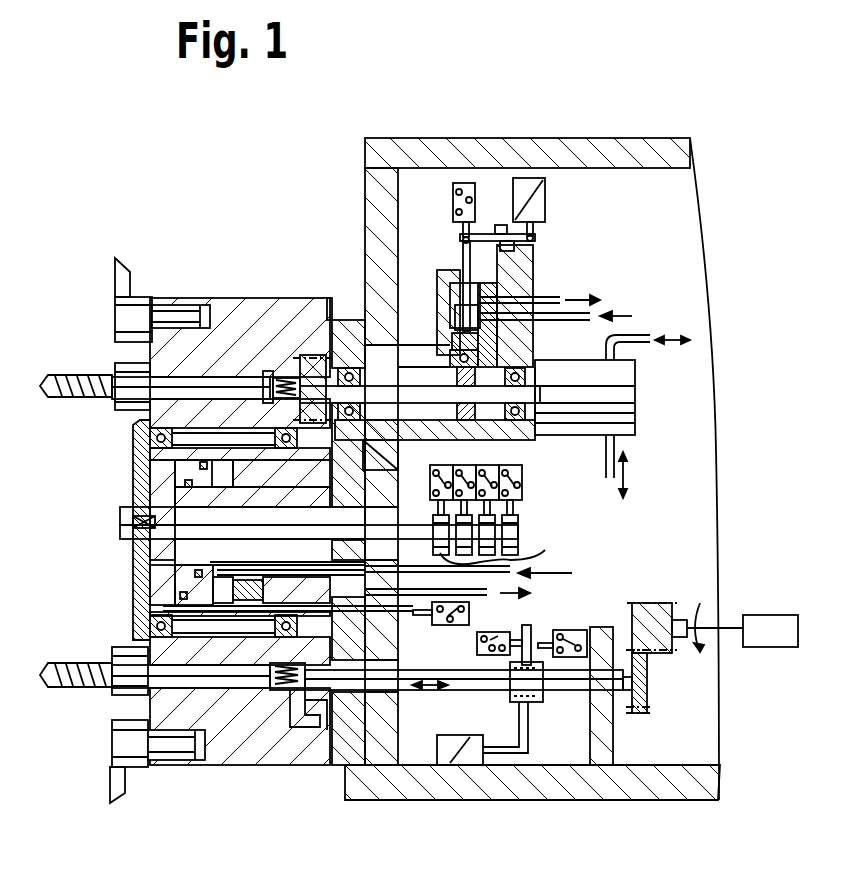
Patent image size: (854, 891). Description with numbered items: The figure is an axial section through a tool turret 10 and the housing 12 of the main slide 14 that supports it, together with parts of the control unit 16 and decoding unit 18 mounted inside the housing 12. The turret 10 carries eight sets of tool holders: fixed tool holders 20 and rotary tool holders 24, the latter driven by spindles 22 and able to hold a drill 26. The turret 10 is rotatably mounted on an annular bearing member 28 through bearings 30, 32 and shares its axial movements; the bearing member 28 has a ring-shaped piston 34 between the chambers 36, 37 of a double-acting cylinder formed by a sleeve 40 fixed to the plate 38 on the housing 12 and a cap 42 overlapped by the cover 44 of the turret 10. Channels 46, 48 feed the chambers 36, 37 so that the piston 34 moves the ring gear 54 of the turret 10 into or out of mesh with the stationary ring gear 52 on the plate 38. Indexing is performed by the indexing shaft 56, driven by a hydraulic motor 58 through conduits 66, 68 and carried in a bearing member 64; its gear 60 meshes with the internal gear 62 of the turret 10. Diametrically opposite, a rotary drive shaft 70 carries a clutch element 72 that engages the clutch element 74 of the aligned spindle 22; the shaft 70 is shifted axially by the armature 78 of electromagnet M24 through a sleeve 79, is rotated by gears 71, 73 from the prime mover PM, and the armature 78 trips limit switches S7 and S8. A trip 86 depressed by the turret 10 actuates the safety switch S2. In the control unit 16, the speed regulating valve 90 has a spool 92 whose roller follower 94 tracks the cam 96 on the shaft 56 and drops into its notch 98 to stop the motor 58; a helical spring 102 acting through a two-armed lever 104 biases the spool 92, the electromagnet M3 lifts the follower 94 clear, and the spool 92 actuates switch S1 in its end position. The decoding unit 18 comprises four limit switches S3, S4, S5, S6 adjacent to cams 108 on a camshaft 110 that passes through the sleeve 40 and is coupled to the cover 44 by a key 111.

The turret 10 is at (218, 290).
The housing 12 is at (408, 148).
The main slide 14 is at (468, 135).
The control unit 16 is at (545, 273).
The decoding unit 18 is at (522, 510).
The tool holders 20 is at (127, 308).
The spindles 22 is at (232, 385).
The rotary tool holders 24 is at (130, 375).
The drill 26 is at (78, 385).
The annular bearing member 28 is at (165, 598).
The bearing 30 is at (160, 622).
The bearing 32 is at (297, 627).
The ring-shaped piston 34 is at (160, 437).
The cylinder chamber 36 is at (185, 470).
The cylinder chamber 37 is at (255, 445).
The plate 38 is at (352, 802).
The sleeve-like portion 40 is at (195, 582).
The cap 42 is at (195, 560).
The cover 44 is at (143, 483).
The channel 46 is at (490, 576).
The channel 48 is at (487, 592).
The stationary ring gear 52 is at (345, 735).
The ring gear 54 is at (337, 330).
The indexing shaft 56 is at (455, 315).
The hydraulic motor 58 is at (625, 410).
The gear 60 is at (296, 428).
The internal gear 62 is at (298, 692).
The bearing member 64 is at (432, 442).
The conduit 66 is at (625, 462).
The conduit 68 is at (640, 345).
The rotary drive shaft 70 is at (430, 670).
The gear 71 is at (648, 692).
The clutch element 72 is at (295, 700).
The gear 73 is at (670, 580).
The clutch element 74 is at (290, 715).
The armature 78 is at (530, 715).
The sleeve 79 is at (512, 690).
The rod-like trip 86 is at (395, 615).
The speed regulating valve 90 is at (437, 282).
The spool 92 is at (450, 302).
The roller follower 94 is at (452, 345).
The cam 96 is at (470, 428).
The notch 98 is at (478, 362).
The helical spring 102 is at (545, 246).
The two-armed lever 104 is at (463, 262).
The cams 108 is at (519, 550).
The camshaft 110 is at (133, 530).
The key 111 is at (140, 520).
The switch S1 is at (453, 190).
The safety limit switch S2 is at (469, 612).
The limit switch S3 is at (430, 482).
The limit switch S4 is at (470, 462).
The limit switch S5 is at (500, 470).
The limit switch S6 is at (522, 482).
The limit switch S7 is at (495, 656).
The limit switch S8 is at (562, 631).
The disengaging electromagnet M3 is at (545, 190).
The electromagnet M24 is at (468, 768).
The prime mover PM is at (770, 631).